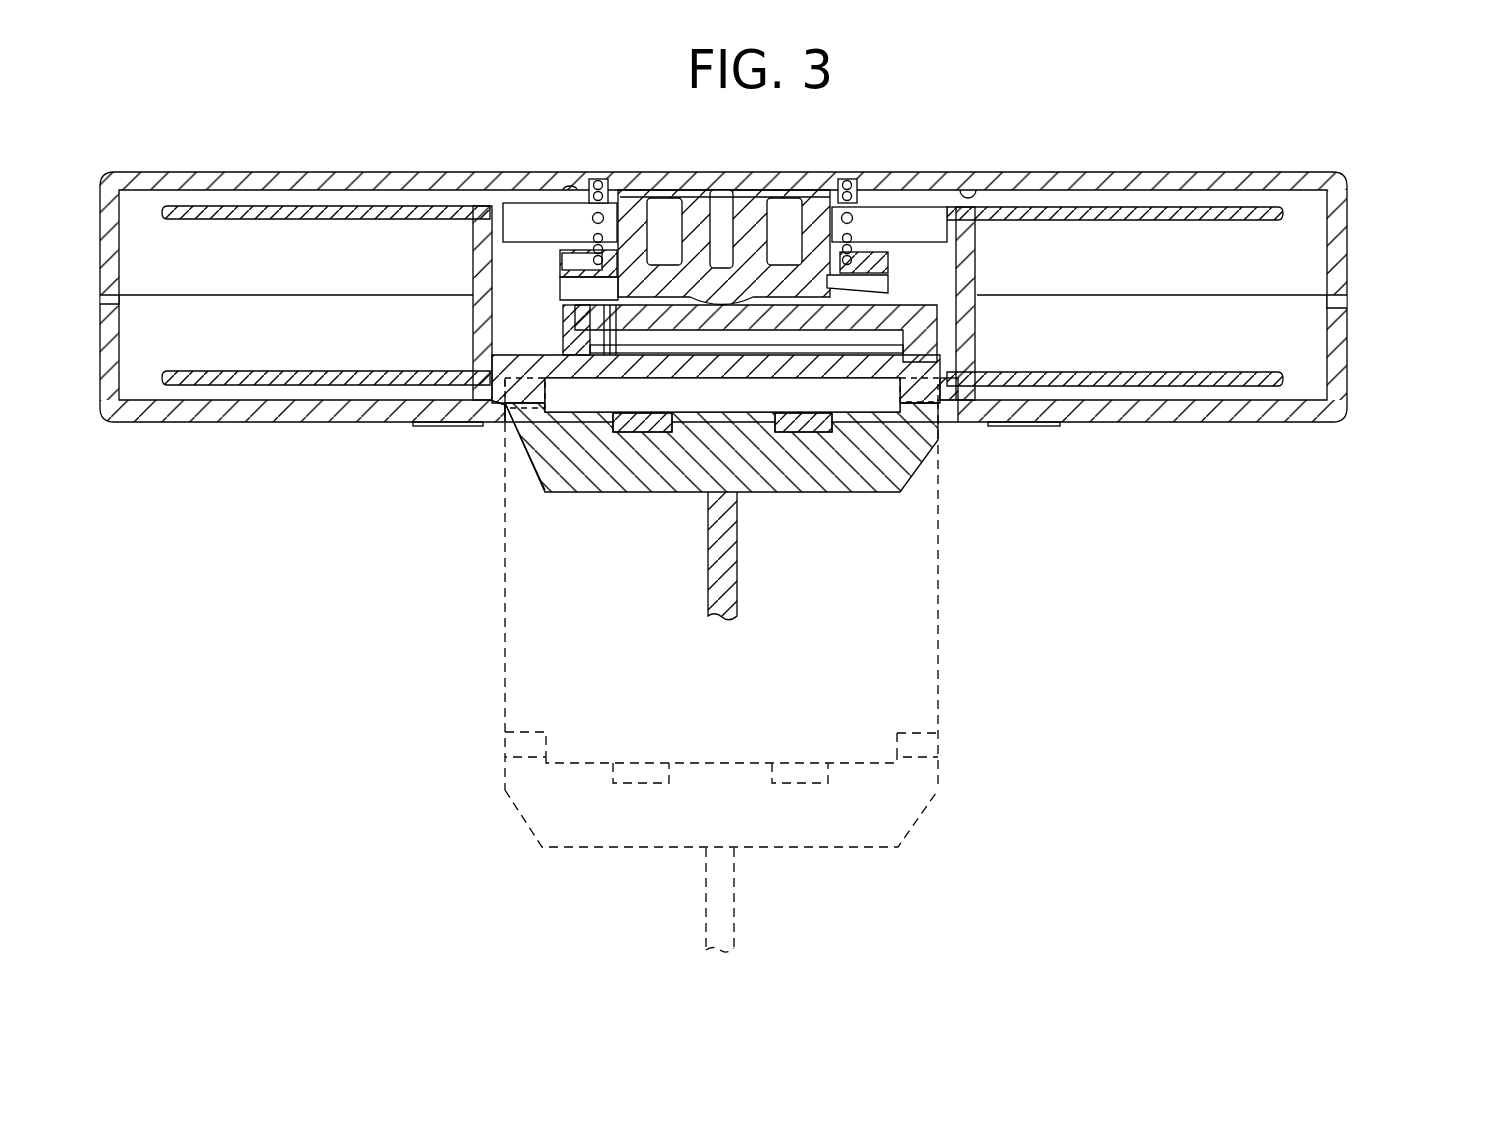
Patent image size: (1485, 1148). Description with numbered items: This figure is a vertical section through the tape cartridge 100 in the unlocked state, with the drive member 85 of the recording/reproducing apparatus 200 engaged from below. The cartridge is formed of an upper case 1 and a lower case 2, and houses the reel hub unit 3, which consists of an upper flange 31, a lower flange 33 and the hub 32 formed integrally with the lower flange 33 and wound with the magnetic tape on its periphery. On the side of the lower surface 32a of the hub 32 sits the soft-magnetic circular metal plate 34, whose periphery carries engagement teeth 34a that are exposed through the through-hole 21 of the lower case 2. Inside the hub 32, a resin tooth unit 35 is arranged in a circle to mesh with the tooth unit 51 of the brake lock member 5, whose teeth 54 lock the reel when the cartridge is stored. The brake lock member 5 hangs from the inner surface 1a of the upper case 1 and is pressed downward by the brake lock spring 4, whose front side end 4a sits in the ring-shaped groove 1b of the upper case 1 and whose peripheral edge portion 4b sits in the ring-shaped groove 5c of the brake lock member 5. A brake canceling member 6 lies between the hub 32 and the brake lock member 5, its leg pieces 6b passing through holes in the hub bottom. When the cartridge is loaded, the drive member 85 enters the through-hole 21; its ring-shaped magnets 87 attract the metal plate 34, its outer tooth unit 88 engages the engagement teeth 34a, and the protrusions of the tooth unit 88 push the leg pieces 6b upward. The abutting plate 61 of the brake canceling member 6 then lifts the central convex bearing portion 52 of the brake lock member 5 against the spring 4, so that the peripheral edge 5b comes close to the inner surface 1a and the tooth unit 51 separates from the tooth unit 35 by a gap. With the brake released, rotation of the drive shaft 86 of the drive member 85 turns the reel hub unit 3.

The tape cartridge 100 is at (1372, 266).
The upper case 1 is at (1354, 199).
The inner surface 1a is at (975, 190).
The ring-shaped groove 1b is at (578, 190).
The lower case 2 is at (1306, 426).
The through-hole 21 is at (500, 417).
The reel hub unit 3 is at (722, 355).
The upper flange 31 is at (1203, 216).
The hub 32 is at (967, 328).
The lower surface 32a is at (944, 382).
The lower flange 33 is at (1238, 387).
The metal plate 34 is at (692, 436).
The engagement teeth 34a is at (527, 392).
The tooth unit 35 is at (578, 316).
The brake lock spring 4 is at (567, 190).
The front side end 4a is at (600, 190).
The peripheral edge portion 4b is at (562, 267).
The brake lock member 5 is at (881, 197).
The peripheral edge 5b is at (822, 190).
The ring-shaped groove 5c is at (858, 262).
The tooth unit 51 is at (896, 287).
The central convex bearing portion 52 is at (710, 293).
The teeth 54 is at (620, 283).
The abutting plate 61 is at (760, 303).
The brake canceling member 6 is at (824, 383).
The leg pieces 6b is at (945, 420).
The recording/reproducing apparatus 200 is at (716, 665).
The drive member 85 is at (920, 405).
The drive shaft 86 is at (738, 585).
The magnets 87 is at (652, 432).
The tooth unit 88 is at (916, 402).